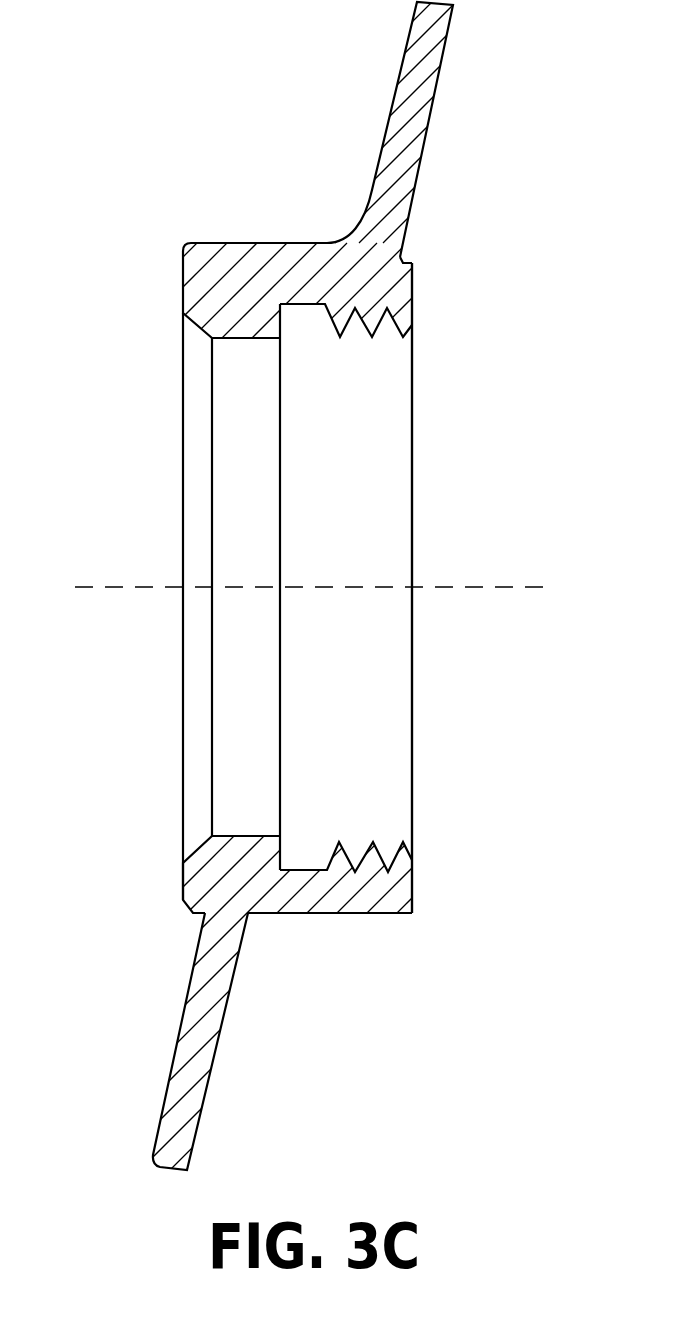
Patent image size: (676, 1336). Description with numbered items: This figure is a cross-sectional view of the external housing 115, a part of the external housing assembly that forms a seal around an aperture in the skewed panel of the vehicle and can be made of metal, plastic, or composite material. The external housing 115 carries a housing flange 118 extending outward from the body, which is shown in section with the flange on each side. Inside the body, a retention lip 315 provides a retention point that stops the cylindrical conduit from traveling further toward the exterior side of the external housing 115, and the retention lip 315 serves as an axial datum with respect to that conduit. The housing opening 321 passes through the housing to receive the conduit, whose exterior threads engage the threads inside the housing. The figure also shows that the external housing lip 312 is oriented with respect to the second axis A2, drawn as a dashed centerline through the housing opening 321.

The external housing 115 is at (325, 586).
The housing flange 118 is at (398, 152).
The external housing lip 312 is at (403, 263).
The retention lip 315 is at (265, 322).
The housing opening 321 is at (443, 538).
The second axis A2 is at (97, 587).